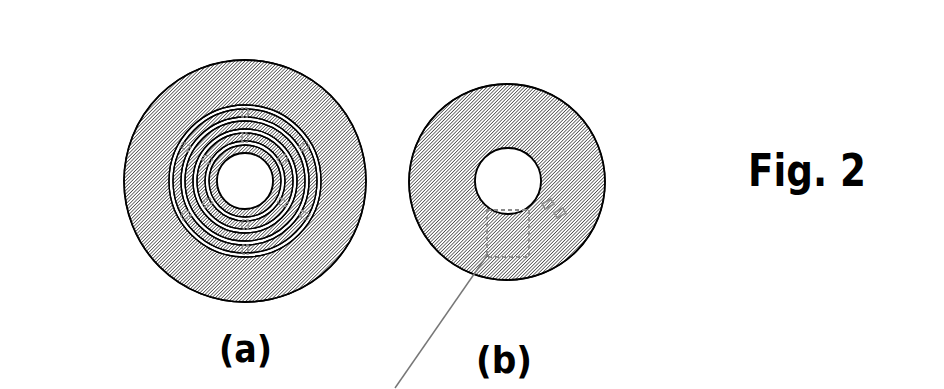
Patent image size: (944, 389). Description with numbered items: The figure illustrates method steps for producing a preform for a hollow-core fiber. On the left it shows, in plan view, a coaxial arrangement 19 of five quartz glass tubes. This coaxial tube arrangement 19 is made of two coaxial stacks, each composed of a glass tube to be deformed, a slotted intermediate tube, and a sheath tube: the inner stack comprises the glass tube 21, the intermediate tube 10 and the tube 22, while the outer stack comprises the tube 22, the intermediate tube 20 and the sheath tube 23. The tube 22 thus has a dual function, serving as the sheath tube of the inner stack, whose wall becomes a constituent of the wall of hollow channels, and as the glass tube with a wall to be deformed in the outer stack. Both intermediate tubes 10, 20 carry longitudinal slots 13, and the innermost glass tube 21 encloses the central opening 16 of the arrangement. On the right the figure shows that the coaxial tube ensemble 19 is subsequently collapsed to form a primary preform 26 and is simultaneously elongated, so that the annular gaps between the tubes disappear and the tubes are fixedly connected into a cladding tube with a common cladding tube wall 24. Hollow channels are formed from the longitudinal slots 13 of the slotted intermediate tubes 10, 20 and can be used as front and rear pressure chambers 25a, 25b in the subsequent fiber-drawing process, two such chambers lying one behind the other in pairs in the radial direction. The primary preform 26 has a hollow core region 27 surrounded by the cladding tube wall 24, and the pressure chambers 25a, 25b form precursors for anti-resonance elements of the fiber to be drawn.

The coaxial arrangement 19 is at (213, 156).
The sheath tube 23 is at (153, 140).
The glass tube 21 is at (197, 235).
The intermediate tube 20 is at (178, 182).
The glass tube / sheath tube 22 is at (193, 198).
The intermediate tube 10 is at (213, 208).
The longitudinal slots 13 is at (244, 138).
The core 16 is at (233, 193).
The primary preform 26 is at (535, 207).
The cladding tube wall 24 is at (565, 248).
The hollow core region 27 is at (496, 193).
The front pressure chamber 25a is at (552, 201).
The rear pressure chamber 25b is at (564, 212).